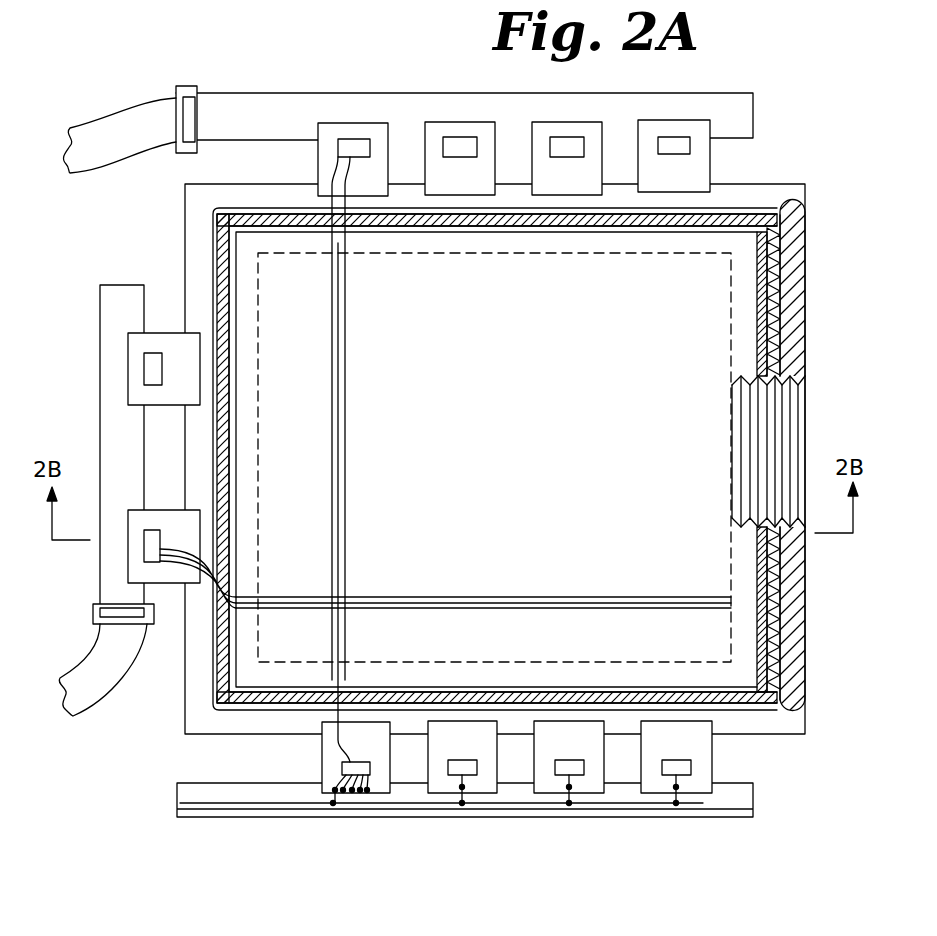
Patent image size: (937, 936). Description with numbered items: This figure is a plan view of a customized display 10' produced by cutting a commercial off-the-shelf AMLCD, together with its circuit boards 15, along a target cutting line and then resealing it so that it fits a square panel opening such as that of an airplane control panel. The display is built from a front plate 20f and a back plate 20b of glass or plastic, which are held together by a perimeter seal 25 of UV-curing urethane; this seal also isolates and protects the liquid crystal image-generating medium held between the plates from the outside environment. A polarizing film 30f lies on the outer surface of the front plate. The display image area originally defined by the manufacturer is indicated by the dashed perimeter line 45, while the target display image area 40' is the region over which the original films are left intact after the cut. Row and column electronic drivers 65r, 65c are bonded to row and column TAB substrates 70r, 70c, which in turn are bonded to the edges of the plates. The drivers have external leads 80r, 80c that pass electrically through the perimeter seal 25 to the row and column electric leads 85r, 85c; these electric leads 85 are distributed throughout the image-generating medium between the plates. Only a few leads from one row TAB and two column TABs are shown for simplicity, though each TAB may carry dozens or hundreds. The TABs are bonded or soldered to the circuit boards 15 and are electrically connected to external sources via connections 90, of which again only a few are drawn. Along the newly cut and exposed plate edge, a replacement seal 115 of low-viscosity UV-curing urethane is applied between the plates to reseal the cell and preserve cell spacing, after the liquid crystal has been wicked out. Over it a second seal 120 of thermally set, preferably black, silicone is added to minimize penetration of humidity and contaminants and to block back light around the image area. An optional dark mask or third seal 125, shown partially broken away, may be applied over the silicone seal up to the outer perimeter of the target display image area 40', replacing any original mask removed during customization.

The customized display 10' is at (817, 121).
The circuit boards 15 is at (243, 115).
The back plate 20b is at (200, 722).
The front plate 20f is at (213, 212).
The perimeter seal 25 is at (725, 215).
The polarizing film 30f is at (236, 255).
The target display image area 40' is at (782, 304).
The dashed perimeter line 45 is at (775, 330).
The column electronic drivers 65c is at (352, 146).
The row electronic drivers 65r is at (155, 370).
The column TAB substrates 70c is at (332, 128).
The row TAB substrates 70r is at (137, 394).
The column external leads 80c is at (340, 745).
The row external leads 80r is at (180, 570).
The row and column electric leads 85 is at (757, 298).
The column electric leads 85c is at (346, 460).
The row electric leads 85r is at (490, 597).
The connections 90 is at (372, 790).
The replacement seal 115 is at (770, 645).
The second seal 120 is at (790, 583).
The mask or third seal 125 is at (785, 402).